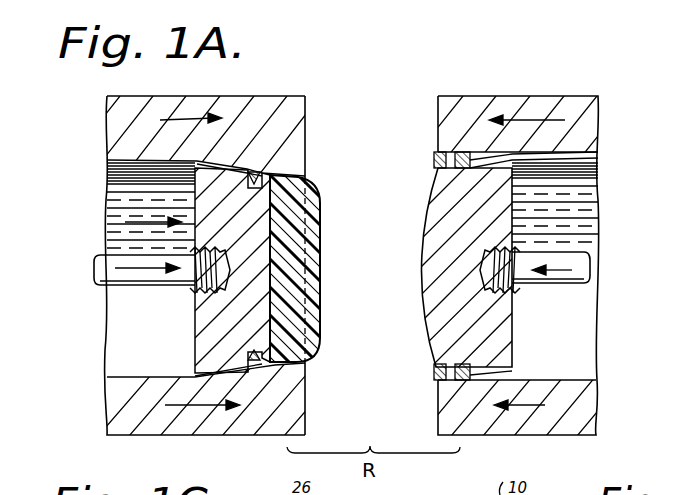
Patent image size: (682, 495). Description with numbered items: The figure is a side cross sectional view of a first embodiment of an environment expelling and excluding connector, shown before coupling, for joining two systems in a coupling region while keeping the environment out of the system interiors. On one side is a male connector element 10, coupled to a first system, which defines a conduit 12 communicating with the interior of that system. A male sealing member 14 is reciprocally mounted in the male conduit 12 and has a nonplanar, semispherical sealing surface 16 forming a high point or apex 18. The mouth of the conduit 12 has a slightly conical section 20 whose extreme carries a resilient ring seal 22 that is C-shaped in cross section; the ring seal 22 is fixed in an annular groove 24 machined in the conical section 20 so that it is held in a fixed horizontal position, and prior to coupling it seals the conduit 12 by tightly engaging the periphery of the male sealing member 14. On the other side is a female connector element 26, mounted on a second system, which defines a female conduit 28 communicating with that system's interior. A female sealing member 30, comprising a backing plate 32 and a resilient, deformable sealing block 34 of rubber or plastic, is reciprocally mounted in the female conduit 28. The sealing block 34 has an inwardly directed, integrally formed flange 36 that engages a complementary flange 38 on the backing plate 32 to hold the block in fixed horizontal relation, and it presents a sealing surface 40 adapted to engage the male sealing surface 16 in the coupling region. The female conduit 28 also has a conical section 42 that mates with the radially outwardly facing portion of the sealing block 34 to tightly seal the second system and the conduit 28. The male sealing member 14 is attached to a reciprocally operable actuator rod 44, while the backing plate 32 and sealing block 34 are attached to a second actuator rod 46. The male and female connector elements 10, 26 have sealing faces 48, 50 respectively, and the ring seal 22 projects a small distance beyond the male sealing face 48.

The male connector element 10 is at (558, 85).
The male conduit 12 is at (595, 172).
The male sealing member 14 is at (512, 216).
The sealing surface 16 is at (418, 318).
The apex 18 is at (414, 257).
The conical section 20 is at (495, 375).
The ring seal 22 is at (440, 370).
The annular groove 24 is at (452, 385).
The female connector element 26 is at (290, 89).
The female conduit 28 is at (112, 166).
The female sealing member 30 is at (108, 220).
The backing plate 32 is at (195, 321).
The sealing block 34 is at (312, 352).
The flange 36 is at (268, 170).
The flange 38 is at (276, 193).
The sealing surface 40 is at (321, 288).
The conical section 42 is at (196, 373).
The actuator rod 44 is at (587, 272).
The actuator rod 46 is at (98, 287).
The sealing face 48 is at (437, 128).
The sealing face 50 is at (270, 165).